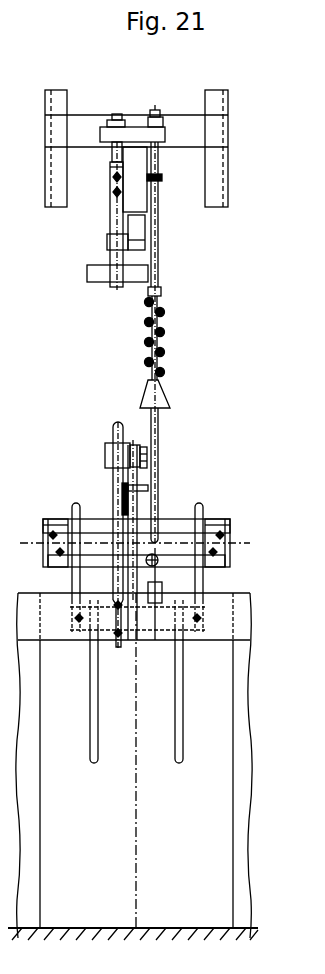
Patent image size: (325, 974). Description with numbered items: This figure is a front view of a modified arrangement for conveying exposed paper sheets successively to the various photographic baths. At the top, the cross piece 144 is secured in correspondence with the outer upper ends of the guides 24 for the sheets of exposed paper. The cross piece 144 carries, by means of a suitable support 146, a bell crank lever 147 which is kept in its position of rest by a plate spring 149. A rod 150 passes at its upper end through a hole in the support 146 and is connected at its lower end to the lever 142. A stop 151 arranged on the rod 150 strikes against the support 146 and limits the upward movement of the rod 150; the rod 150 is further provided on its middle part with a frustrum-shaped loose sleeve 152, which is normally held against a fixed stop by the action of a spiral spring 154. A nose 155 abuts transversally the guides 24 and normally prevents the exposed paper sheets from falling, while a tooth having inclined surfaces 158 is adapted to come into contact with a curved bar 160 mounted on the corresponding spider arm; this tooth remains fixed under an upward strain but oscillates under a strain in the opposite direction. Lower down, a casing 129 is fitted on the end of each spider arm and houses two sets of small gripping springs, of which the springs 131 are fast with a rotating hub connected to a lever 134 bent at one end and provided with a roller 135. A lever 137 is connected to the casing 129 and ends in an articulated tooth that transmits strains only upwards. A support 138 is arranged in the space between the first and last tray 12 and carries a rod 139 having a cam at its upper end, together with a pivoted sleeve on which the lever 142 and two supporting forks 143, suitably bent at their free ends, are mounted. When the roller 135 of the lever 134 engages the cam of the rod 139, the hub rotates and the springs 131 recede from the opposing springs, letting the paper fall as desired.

The tray 12 is at (134, 765).
The guide 24 is at (57, 103).
The casing 129 is at (182, 530).
The springs 131 is at (76, 582).
The lever 134 is at (133, 478).
The roller 135 is at (108, 463).
The lever 137 is at (80, 563).
The support 138 is at (28, 631).
The rod 139 is at (115, 490).
The lever 142 is at (154, 604).
The supporting forks 143 is at (95, 721).
The cross piece 144 is at (85, 136).
The support 146 is at (110, 162).
The bell crank lever 147 is at (100, 275).
The plate spring 149 is at (110, 188).
The rod 150 is at (159, 421).
The stop 151 is at (160, 124).
The frustrum-shaped loose sleeve 152 is at (151, 388).
The spiral spring 154 is at (157, 338).
The nose 155 is at (133, 203).
The tooth having inclined surfaces 158 is at (133, 233).
The curved bar 160 is at (127, 498).